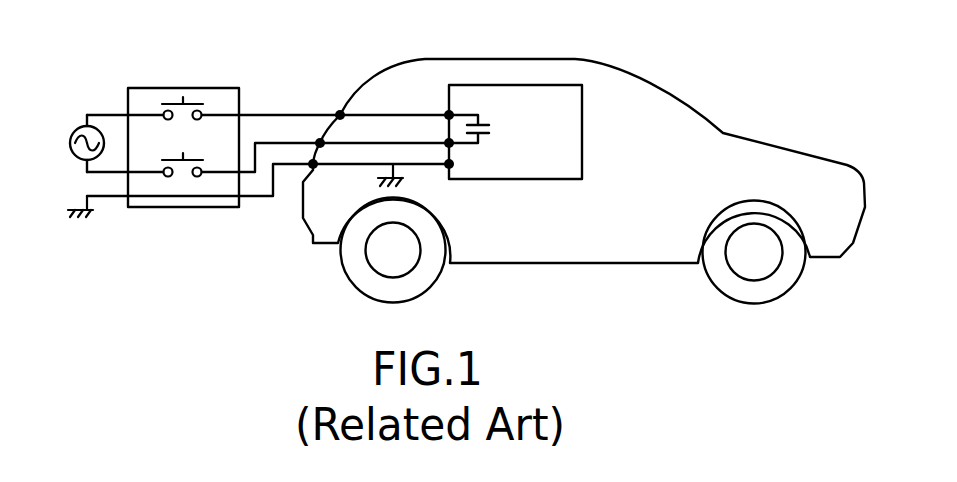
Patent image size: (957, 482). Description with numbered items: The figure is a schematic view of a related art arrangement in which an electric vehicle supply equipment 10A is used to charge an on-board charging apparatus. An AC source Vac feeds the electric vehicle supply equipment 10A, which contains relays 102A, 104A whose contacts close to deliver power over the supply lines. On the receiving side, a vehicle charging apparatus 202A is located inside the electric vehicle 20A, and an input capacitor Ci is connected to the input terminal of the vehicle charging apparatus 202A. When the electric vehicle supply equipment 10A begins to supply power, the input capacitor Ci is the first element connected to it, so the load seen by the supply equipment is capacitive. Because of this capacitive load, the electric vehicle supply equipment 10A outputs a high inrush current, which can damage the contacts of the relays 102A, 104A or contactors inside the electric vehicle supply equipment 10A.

The AC power source Vac is at (67, 139).
The electric vehicle supply equipment 10A is at (225, 98).
The relay 102A is at (175, 98).
The relay 104A is at (186, 180).
The electric vehicle 20A is at (650, 100).
The vehicle charging apparatus 202A is at (548, 113).
The input capacitor Ci is at (489, 118).